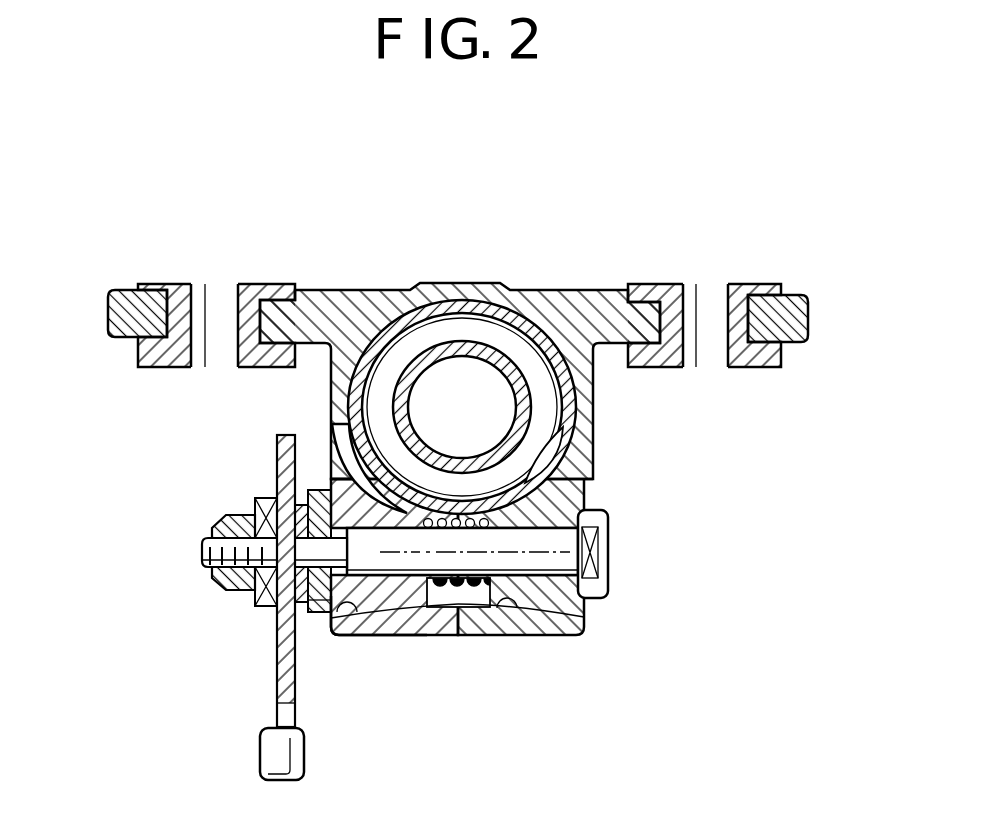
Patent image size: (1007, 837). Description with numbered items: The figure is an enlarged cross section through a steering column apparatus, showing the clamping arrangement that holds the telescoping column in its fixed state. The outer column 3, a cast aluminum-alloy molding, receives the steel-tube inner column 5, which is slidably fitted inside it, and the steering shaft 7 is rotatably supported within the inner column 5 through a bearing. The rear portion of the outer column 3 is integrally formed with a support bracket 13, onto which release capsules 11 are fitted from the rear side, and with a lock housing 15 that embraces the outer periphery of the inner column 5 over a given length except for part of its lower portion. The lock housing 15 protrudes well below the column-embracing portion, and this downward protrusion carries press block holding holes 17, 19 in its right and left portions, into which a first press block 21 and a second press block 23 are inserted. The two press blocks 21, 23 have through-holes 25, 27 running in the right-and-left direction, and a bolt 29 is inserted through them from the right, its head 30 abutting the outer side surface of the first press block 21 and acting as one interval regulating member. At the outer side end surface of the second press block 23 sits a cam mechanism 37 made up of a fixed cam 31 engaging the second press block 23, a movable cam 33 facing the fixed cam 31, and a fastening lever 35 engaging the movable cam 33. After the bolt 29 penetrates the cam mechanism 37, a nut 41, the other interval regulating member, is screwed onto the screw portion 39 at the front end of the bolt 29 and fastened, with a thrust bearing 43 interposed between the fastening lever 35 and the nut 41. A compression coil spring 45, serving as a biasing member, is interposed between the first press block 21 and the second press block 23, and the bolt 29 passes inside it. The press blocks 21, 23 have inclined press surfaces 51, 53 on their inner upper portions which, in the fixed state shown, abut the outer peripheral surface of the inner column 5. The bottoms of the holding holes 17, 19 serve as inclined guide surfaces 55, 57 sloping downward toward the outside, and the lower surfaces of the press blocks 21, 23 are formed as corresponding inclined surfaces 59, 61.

The outer column 3 is at (552, 250).
The inner column 5 is at (428, 322).
The steering shaft 7 is at (468, 345).
The release capsules 11 is at (158, 283).
The support bracket 13 is at (122, 312).
The lock housing 15 is at (583, 446).
The press block holding hole 17 is at (572, 493).
The press block holding hole 19 is at (318, 492).
The first press block 21 is at (578, 605).
The second press block 23 is at (405, 607).
The through-hole 25 is at (588, 527).
The through-hole 27 is at (392, 603).
The bolt 29 is at (545, 612).
The head 30 is at (605, 562).
The fixed cam 31 is at (317, 618).
The movable cam 33 is at (277, 612).
The fastening lever 35 is at (280, 680).
The cam mechanism 37 is at (195, 622).
The screw portion 39 is at (203, 548).
The nut 41 is at (227, 515).
The thrust bearing 43 is at (260, 498).
The compression coil spring 45 is at (448, 585).
The inclined press surface 51 is at (570, 430).
The inclined press surface 53 is at (402, 470).
The inclined guide surface 55 is at (522, 612).
The inclined guide surface 57 is at (363, 607).
The inclined surface 59 is at (552, 553).
The inclined surface 61 is at (357, 600).